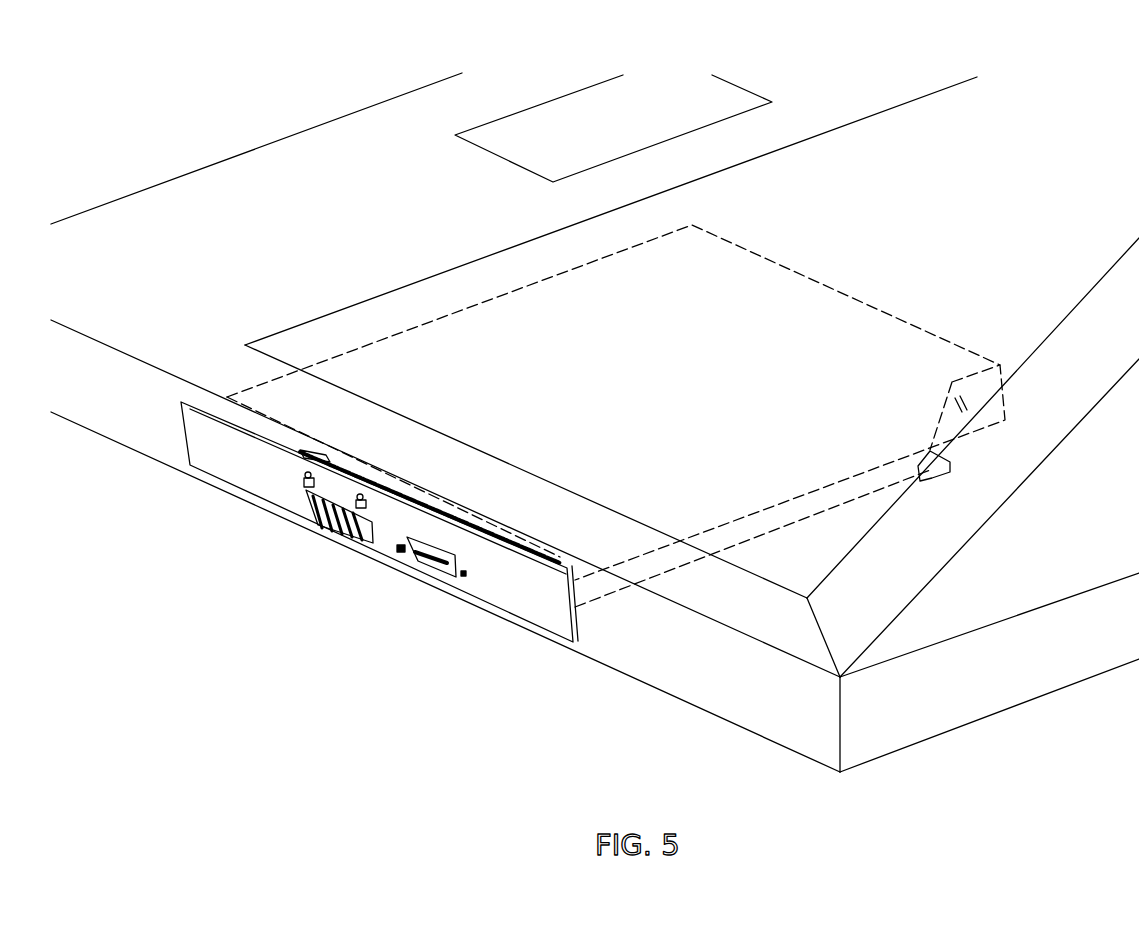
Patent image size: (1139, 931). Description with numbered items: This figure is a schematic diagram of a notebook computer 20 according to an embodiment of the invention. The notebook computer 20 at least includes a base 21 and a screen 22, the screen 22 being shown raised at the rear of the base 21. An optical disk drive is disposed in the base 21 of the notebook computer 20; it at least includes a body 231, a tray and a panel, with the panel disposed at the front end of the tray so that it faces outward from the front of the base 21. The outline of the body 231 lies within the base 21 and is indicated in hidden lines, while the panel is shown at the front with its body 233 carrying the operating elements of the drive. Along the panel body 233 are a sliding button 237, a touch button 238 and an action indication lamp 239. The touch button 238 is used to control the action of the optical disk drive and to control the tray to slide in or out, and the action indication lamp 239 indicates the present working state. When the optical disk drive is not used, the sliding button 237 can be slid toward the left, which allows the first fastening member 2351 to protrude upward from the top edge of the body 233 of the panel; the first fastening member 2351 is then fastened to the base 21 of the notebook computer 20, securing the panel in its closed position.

The notebook computer 20 is at (595, 422).
The base 21 is at (163, 190).
The screen 22 is at (928, 540).
The body 231 is at (602, 587).
The body of the panel 233 is at (222, 460).
The first fastening member 2351 is at (298, 457).
The sliding button 237 is at (318, 520).
The touch button 238 is at (424, 570).
The action indication lamp 239 is at (400, 552).